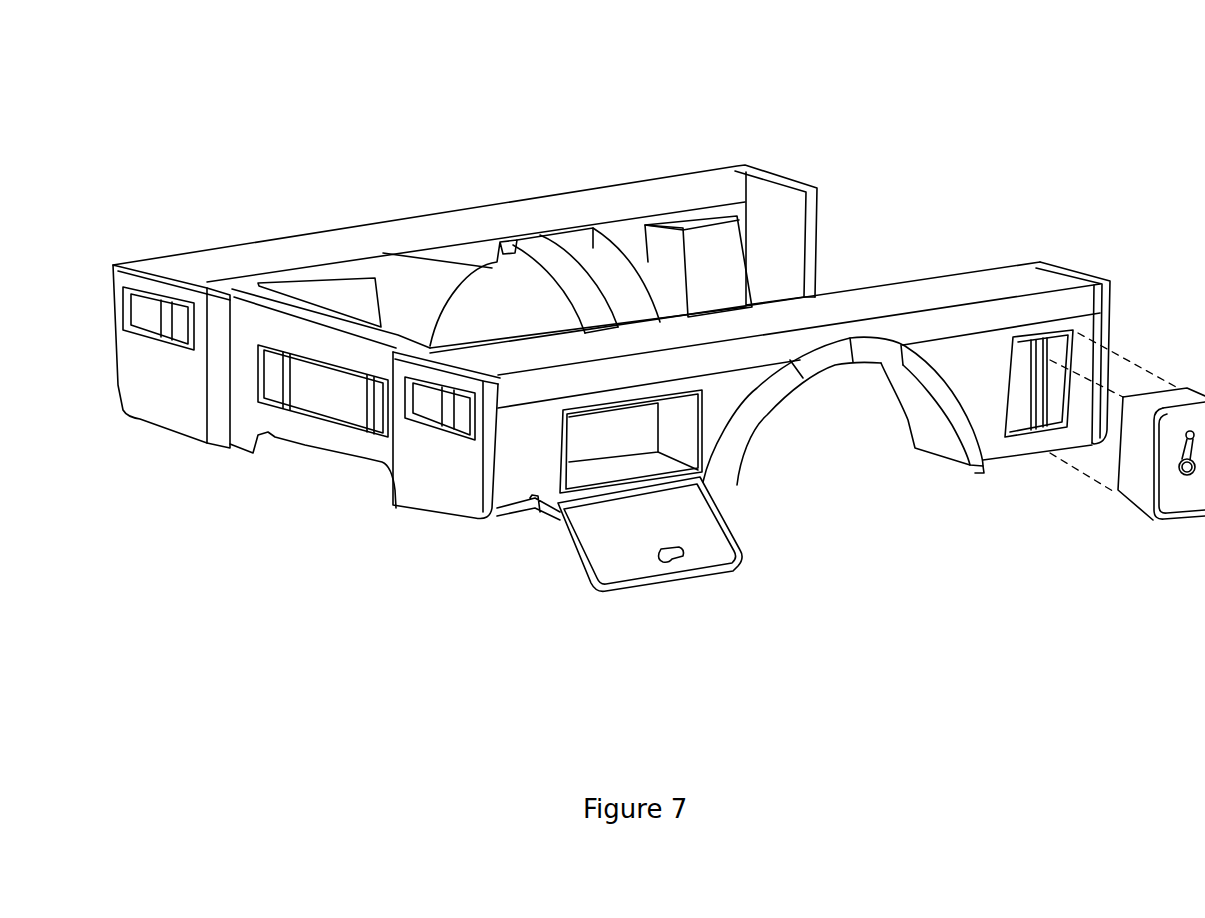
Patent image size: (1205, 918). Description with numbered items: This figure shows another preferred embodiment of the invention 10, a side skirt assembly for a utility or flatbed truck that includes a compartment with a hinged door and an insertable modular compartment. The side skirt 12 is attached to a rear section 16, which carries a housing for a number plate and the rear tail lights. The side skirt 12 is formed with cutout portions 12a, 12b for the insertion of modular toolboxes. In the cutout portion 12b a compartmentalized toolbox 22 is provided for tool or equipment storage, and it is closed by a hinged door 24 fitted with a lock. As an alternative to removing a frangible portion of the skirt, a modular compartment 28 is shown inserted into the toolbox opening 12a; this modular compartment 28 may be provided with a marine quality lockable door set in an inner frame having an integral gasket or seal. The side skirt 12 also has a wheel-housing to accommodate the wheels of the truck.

The truck body assembly 10 is at (1036, 93).
The side skirt 12 is at (920, 292).
The cutout portion 12a is at (1000, 426).
The cutout portion 12b is at (557, 478).
The rear section 16 is at (269, 471).
The compartmentalized toolbox 22 is at (703, 430).
The hinged door 24 is at (600, 595).
The modular compartment 28 is at (1180, 530).